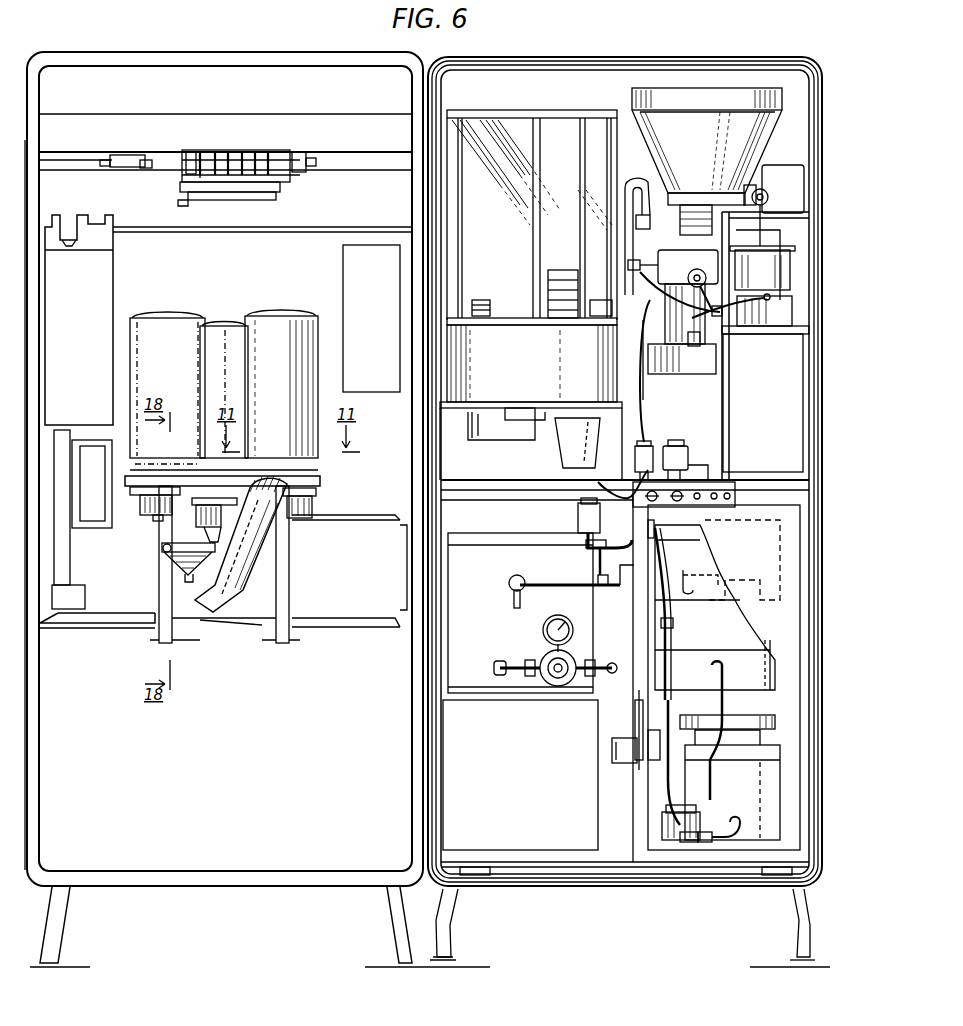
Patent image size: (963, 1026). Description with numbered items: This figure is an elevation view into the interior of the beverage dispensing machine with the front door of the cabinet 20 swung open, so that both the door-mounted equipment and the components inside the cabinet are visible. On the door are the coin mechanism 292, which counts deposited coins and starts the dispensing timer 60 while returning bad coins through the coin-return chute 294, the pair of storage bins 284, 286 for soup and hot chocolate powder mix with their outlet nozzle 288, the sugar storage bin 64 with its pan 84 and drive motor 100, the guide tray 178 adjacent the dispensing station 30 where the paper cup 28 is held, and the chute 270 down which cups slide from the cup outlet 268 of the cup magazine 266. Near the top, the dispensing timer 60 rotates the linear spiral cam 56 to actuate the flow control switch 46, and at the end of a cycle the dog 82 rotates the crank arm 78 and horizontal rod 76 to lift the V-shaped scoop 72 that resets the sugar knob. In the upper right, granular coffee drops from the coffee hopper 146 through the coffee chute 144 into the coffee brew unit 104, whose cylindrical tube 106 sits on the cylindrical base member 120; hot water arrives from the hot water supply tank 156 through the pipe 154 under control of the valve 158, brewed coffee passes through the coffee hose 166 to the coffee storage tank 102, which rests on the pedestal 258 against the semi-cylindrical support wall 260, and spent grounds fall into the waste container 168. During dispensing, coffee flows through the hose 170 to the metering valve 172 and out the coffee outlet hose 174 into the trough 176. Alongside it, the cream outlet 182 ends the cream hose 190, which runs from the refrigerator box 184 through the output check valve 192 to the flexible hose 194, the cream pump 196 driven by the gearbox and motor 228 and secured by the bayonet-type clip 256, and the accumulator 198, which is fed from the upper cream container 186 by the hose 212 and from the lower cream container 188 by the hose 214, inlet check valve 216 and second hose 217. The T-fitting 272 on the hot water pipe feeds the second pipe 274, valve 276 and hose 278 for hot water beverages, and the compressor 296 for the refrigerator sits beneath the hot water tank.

The cabinet 20 is at (305, 935).
The dispensing timer 60 is at (247, 145).
The linear spiral cam 56 is at (188, 155).
The dog 82 is at (202, 158).
The flow control switch 46 is at (185, 183).
The V-shaped scoop 72 is at (176, 204).
The crank arm 78 is at (190, 196).
The horizontal rod 76 is at (228, 200).
The coin mechanism 292 is at (79, 320).
The storage bin 284 is at (150, 345).
The storage bin 286 is at (218, 360).
The sugar storage bin 64 is at (276, 345).
The pan 84 is at (322, 470).
The drive motor 100 is at (312, 500).
The outlet nozzle 288 is at (175, 516).
The guide tray 178 is at (182, 566).
The chute 270 is at (262, 525).
The dispensing station 30 is at (238, 636).
The coin-return chute 294 is at (62, 552).
The cup magazine 266 is at (515, 108).
The paper cup 28 is at (560, 295).
The cup outlet 268 is at (570, 446).
The coffee hopper 146 is at (707, 146).
The coffee chute 144 is at (740, 222).
The coffee storage tank 102 is at (622, 280).
The pipe 154 is at (725, 328).
The cylindrical tube 106 is at (758, 272).
The cylindrical base member 120 is at (768, 300).
The coffee brew unit 104 is at (790, 334).
The waste container 168 is at (763, 403).
The coffee hose 166 is at (648, 290).
The semi-cylindrical support wall 260 is at (678, 345).
The pedestal 258 is at (680, 392).
The hose 170 is at (648, 404).
The metering valve 172 is at (646, 440).
The valve 158 is at (676, 460).
The coffee outlet hose 174 is at (602, 478).
The valve 276 is at (578, 510).
The hose 278 is at (582, 530).
The second pipe 274 is at (598, 552).
The T-fitting 272 is at (596, 578).
The hot water supply tank 156 is at (520, 613).
The refrigerator box 184 is at (626, 644).
The compressor 296 is at (520, 775).
The cream container 186 is at (724, 677).
The cream outlet 182 is at (665, 522).
The cream hose 190 is at (678, 565).
The trough 176 is at (660, 560).
The output check valve 192 is at (680, 608).
The hose 194 is at (702, 680).
The hose 212 is at (696, 740).
The cream container 188 is at (732, 785).
The bayonet-type clip 256 is at (640, 728).
The gearbox and motor 228 is at (610, 732).
The cream pump 196 is at (656, 742).
The accumulator 198 is at (702, 800).
The hose 214 is at (690, 842).
The inlet check valve 216 is at (704, 846).
The second hose 217 is at (728, 840).